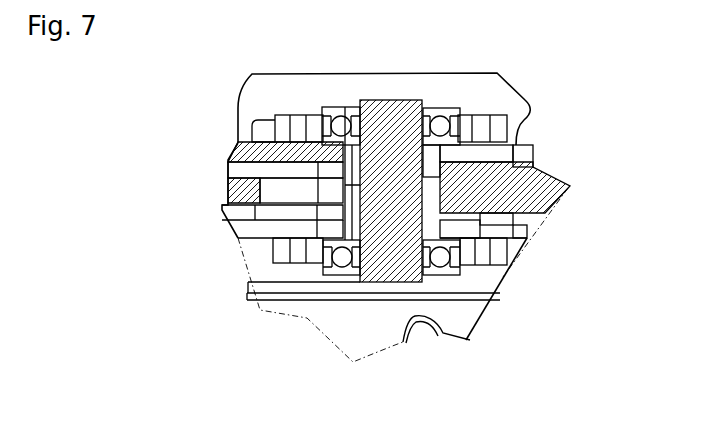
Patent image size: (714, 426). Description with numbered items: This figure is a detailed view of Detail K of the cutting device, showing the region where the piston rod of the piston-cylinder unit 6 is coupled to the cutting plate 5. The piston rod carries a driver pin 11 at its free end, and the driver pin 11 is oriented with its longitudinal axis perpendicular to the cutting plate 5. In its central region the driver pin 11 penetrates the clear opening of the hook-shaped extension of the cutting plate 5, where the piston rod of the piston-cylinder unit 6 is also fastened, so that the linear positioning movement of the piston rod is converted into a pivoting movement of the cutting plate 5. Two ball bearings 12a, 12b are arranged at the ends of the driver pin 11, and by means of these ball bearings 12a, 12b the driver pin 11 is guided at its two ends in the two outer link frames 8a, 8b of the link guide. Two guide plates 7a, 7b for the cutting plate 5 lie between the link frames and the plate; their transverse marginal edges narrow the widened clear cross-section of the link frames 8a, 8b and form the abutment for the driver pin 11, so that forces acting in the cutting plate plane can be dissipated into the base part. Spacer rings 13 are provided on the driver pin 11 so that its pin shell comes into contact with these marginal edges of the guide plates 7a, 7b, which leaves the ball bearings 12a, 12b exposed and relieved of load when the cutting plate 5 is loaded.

The Detail K is at (395, 191).
The driver pin 11 is at (422, 96).
The ball bearing 12b is at (458, 108).
The ball bearing 12a is at (452, 272).
The outer link frame 8b is at (300, 122).
The outer link frame 8a is at (293, 260).
The guide plate 7b is at (245, 150).
The guide plate 7a is at (258, 233).
The cutting plate 5 is at (256, 189).
The spacer ring 13 is at (445, 155).
The piston-cylinder unit 6 is at (478, 190).